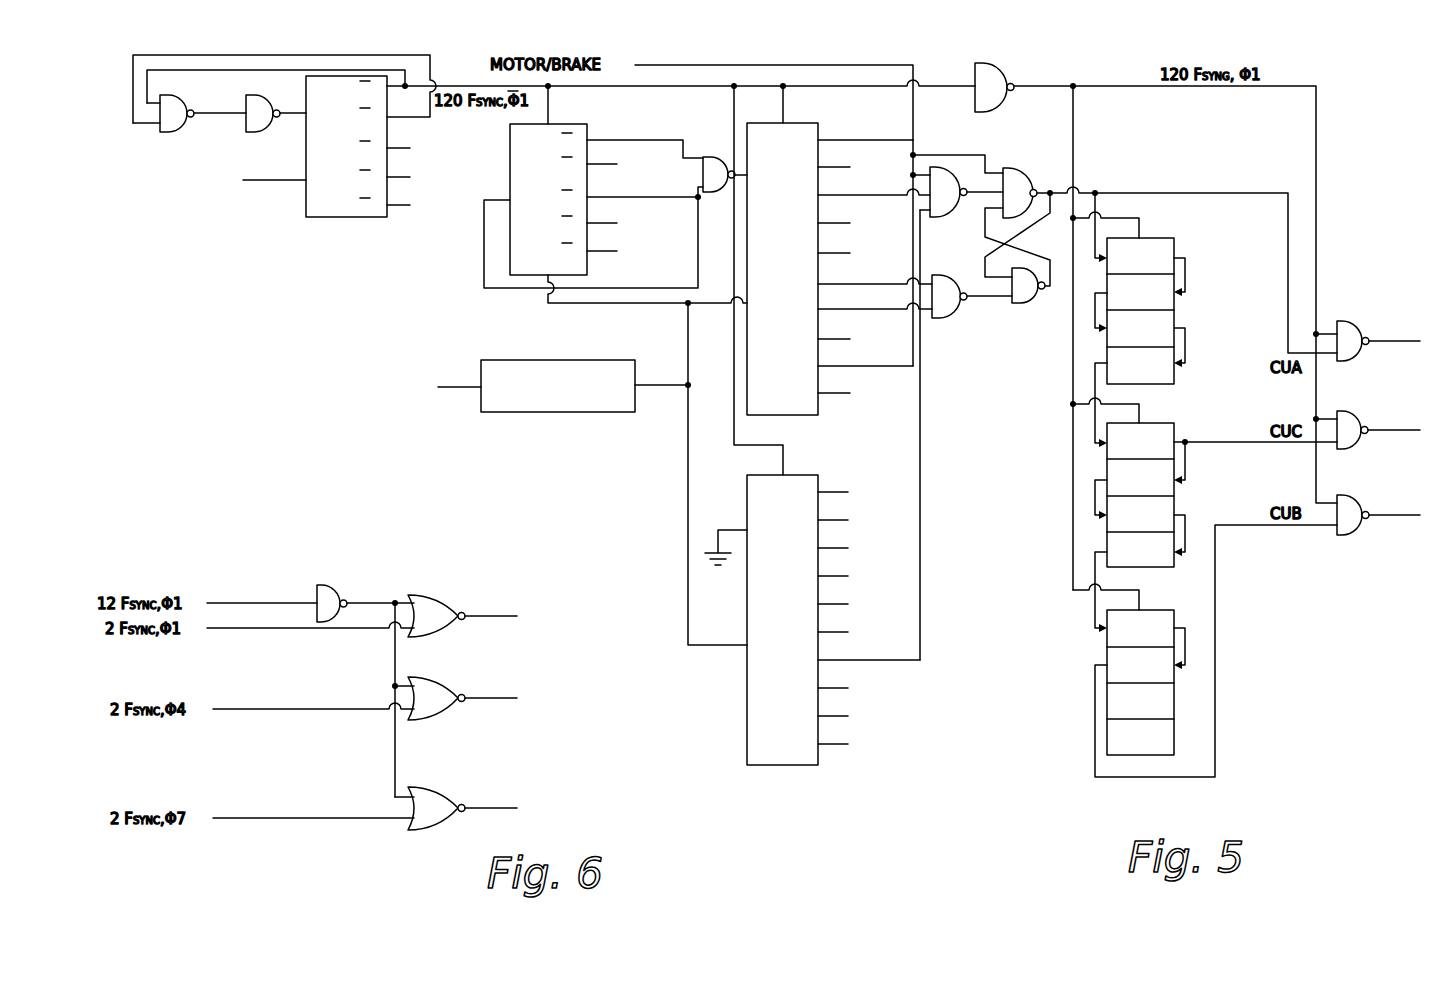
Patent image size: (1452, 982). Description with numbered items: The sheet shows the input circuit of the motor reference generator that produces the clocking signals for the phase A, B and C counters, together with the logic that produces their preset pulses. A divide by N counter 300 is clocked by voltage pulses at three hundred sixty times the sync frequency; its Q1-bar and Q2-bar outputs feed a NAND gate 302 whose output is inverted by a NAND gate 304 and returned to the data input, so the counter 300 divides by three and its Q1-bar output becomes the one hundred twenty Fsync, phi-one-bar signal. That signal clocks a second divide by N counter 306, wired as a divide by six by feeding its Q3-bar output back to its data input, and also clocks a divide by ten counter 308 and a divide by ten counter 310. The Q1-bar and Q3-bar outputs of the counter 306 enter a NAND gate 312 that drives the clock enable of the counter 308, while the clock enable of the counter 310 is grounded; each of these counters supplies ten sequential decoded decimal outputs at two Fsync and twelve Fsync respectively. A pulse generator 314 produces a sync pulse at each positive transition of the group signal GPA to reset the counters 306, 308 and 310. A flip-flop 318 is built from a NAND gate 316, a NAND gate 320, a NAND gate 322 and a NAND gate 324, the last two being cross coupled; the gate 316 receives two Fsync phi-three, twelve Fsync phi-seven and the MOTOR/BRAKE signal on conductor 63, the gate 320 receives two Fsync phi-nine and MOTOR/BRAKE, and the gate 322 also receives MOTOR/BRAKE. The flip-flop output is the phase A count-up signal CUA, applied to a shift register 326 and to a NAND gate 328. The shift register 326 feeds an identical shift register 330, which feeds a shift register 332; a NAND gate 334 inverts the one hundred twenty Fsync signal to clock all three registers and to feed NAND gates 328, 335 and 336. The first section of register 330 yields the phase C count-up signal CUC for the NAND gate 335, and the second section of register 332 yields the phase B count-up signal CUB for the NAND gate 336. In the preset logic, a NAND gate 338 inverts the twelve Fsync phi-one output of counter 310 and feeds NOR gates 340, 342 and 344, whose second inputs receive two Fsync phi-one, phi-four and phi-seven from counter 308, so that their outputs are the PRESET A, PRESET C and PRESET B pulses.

In FIG. 5, the conductor 63 is at (698, 65).
In FIG. 5, the divide by N counter 300 is at (334, 211).
In FIG. 5, the NAND gate 302 is at (167, 131).
In FIG. 5, the NAND gate 304 is at (253, 131).
In FIG. 5, the divide by N counter 306 is at (535, 162).
In FIG. 5, the divide by 10 counter 308 is at (800, 412).
In FIG. 5, the divide by 10 counter 310 is at (768, 700).
In FIG. 5, the NAND gate 312 is at (713, 155).
In FIG. 5, the pulse generator 314 is at (562, 405).
In FIG. 5, the NAND gate 316 is at (947, 200).
In FIG. 5, the flip-flop 318 is at (1045, 186).
In FIG. 5, the NAND gate 320 is at (942, 318).
In FIG. 5, the NAND gate 322 is at (1013, 168).
In FIG. 5, the NAND gate 324 is at (1020, 304).
In FIG. 5, the shift register 326 is at (1160, 240).
In FIG. 5, the NAND gate 328 is at (1345, 326).
In FIG. 5, the shift register 330 is at (1160, 424).
In FIG. 5, the shift register 332 is at (1165, 620).
In FIG. 5, the NAND gate 334 is at (1000, 74).
In FIG. 5, the NAND gate 335 is at (1347, 418).
In FIG. 5, the NAND gate 336 is at (1346, 538).
In FIG. 6, the NAND gate 338 is at (327, 585).
In FIG. 6, the NOR gate 340 is at (440, 598).
In FIG. 6, the NOR gate 342 is at (437, 692).
In FIG. 6, the NOR gate 344 is at (437, 797).